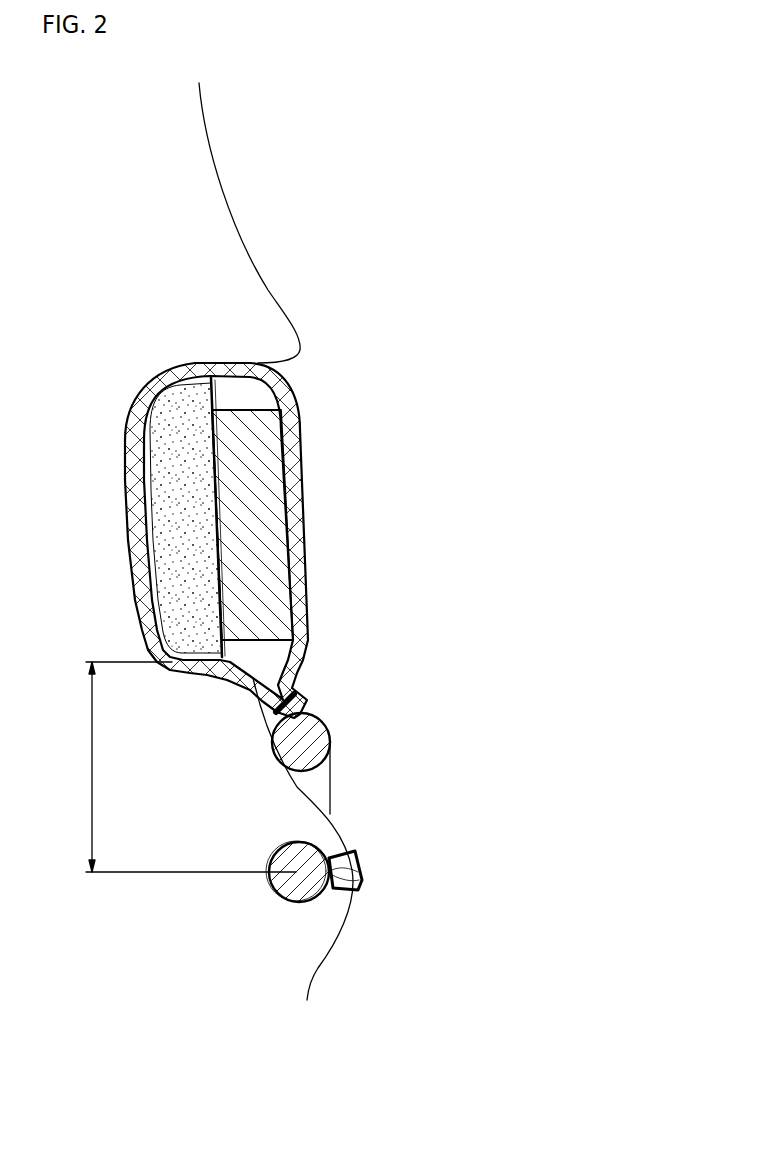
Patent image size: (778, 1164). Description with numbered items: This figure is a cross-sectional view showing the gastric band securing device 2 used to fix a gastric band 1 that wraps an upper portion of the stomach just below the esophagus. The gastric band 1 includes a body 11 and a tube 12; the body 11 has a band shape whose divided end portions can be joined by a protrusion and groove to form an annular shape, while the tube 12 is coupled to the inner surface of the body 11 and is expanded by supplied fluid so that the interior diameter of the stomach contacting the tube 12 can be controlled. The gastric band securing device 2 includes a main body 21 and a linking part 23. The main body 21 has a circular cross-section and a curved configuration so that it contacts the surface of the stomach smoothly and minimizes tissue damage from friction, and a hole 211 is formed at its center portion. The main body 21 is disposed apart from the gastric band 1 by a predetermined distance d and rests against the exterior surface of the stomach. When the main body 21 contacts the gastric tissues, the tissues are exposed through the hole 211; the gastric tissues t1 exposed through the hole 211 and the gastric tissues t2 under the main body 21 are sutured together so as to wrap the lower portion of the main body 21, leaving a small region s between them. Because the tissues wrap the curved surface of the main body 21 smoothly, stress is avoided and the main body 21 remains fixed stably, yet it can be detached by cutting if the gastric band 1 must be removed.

The gastric band 1 is at (260, 540).
The body 11 is at (289, 525).
The tube 12 is at (170, 467).
The gastric band securing device 2 is at (346, 715).
The main body 21 is at (333, 742).
The linking part 23 is at (306, 656).
The hole 211 is at (300, 782).
The gastric tissues exposed through the hole t1 is at (335, 843).
The gastric tissues under the main body t2 is at (345, 898).
The gap / space s is at (358, 863).
The predetermined distance d is at (185, 767).